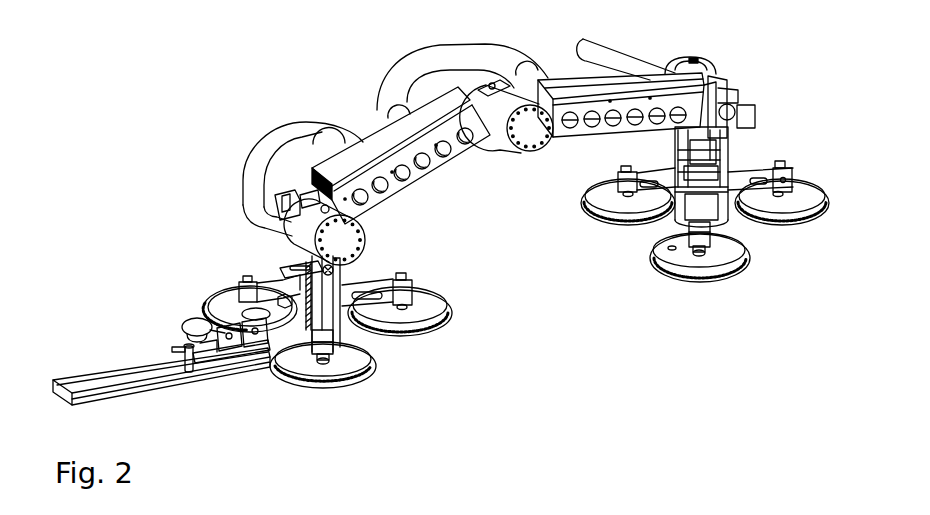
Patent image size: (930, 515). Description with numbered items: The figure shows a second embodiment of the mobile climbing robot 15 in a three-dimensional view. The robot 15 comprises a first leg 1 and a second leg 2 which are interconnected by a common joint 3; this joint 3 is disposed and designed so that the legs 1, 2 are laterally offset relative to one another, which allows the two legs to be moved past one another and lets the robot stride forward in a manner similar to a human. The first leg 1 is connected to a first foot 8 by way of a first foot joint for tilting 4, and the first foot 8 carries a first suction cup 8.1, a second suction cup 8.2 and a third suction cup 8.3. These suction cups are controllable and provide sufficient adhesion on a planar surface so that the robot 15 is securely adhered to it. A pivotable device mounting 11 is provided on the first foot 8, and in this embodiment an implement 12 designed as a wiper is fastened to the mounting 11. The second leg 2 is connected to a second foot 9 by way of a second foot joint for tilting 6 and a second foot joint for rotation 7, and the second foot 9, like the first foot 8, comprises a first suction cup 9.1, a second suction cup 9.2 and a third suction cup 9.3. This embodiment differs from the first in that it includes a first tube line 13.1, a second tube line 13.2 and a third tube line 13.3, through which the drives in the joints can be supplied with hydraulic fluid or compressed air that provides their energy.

The first leg 1 is at (367, 133).
The second leg 2 is at (570, 73).
The common joint 3 is at (512, 157).
The first foot joint for tilting 4 is at (345, 240).
The second foot joint for tilting 6 is at (713, 65).
The second foot joint for rotation 7 is at (733, 225).
The first foot 8 is at (390, 353).
The first suction cup 8.1 is at (213, 288).
The second suction cup 8.2 is at (313, 390).
The third suction cup 8.3 is at (437, 327).
The second foot 9 is at (622, 253).
The first suction cup 9.1 is at (685, 282).
The second suction cup 9.2 is at (803, 173).
The third suction cup 9.3 is at (584, 212).
The pivotable device mounting 11 is at (183, 315).
The implement 12 is at (98, 367).
The first hose or first tube line 13.1 is at (253, 152).
The second hose or second tube line 13.2 is at (437, 50).
The third hose or third tube line 13.3 is at (612, 45).
The mobile climbing robot 15 is at (246, 75).